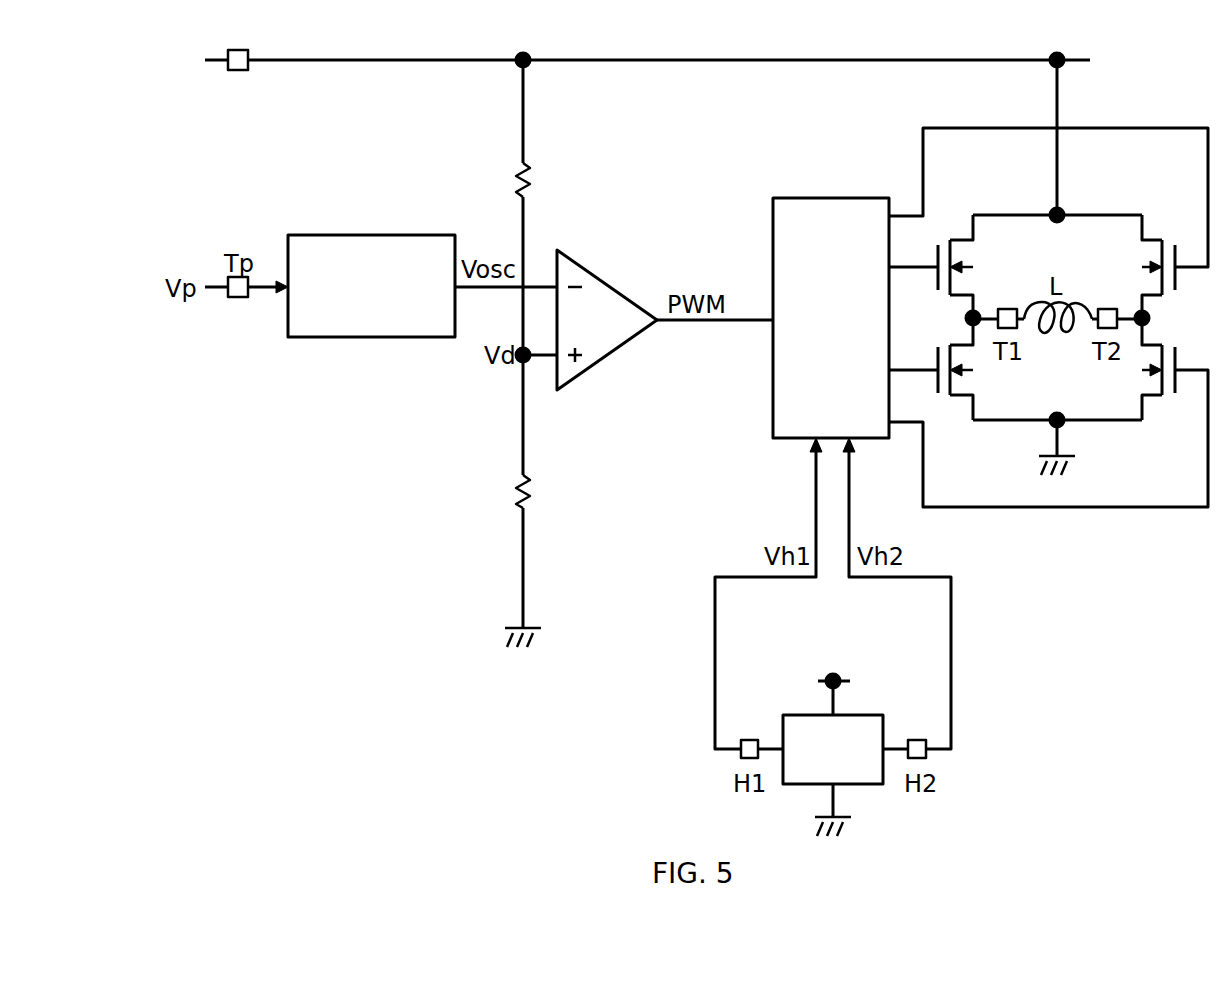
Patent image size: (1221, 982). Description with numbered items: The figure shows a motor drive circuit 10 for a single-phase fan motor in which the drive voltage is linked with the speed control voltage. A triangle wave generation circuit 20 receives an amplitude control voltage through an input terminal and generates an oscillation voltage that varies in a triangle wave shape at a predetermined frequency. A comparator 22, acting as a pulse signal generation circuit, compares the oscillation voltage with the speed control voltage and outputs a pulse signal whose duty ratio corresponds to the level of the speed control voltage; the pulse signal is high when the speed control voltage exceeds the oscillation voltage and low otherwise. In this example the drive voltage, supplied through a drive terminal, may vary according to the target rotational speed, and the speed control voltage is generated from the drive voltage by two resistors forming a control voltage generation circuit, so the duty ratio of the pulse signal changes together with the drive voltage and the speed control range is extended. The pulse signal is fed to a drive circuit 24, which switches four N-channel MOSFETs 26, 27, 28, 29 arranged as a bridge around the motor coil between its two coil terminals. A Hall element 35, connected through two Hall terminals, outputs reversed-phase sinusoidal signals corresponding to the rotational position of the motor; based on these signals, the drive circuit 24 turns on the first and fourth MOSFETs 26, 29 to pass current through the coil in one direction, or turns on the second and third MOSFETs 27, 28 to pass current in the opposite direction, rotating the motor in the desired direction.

The motor drive circuit 10 is at (490, 147).
The triangle wave generation circuit 20 is at (360, 236).
The comparator 22 is at (590, 270).
The drive circuit 24 is at (831, 198).
The N-channel MOSFET 26 is at (957, 240).
The N-channel MOSFET 27 is at (957, 398).
The N-channel MOSFET 28 is at (1158, 240).
The N-channel MOSFET 29 is at (1158, 398).
The Hall element 35 is at (868, 715).